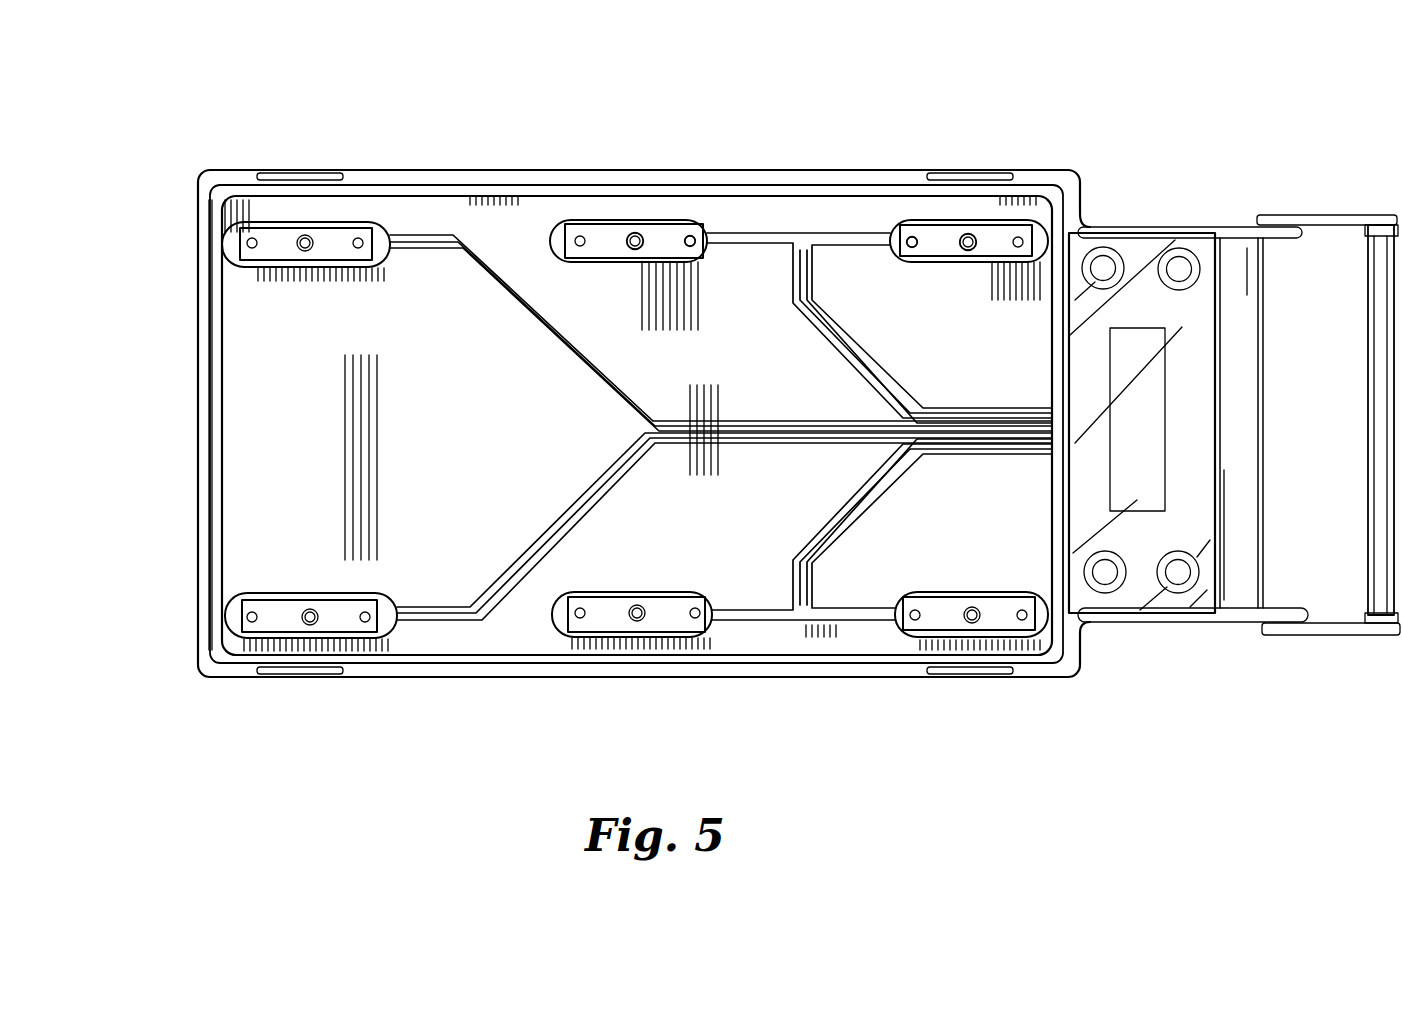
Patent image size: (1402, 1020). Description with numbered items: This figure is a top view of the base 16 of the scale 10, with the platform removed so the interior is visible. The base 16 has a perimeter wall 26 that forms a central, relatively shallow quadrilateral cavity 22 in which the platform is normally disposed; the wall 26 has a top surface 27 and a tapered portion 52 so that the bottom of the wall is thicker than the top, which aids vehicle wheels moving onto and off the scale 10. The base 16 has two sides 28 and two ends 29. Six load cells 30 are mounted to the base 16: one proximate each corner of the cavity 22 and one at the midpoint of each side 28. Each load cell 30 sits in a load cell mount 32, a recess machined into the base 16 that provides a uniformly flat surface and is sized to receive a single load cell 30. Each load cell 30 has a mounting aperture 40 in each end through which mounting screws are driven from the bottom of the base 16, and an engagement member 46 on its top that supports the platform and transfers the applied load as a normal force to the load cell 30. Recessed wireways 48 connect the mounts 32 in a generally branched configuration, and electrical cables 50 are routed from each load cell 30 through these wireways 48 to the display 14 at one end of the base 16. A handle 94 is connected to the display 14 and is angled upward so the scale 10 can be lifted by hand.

The scale 10 is at (268, 87).
The display 14 is at (1159, 200).
The base 16 is at (537, 112).
The quadrilateral cavity 22 is at (500, 507).
The perimeter wall 26 is at (198, 322).
The top surface 27 is at (226, 512).
The side 28 is at (684, 126).
The end 29 is at (165, 403).
The load cell 30 is at (626, 190).
The load cell mount 32 is at (340, 575).
The mounting aperture 40 is at (692, 247).
The engagement member 46 is at (633, 249).
The recessed wireway 48 is at (440, 607).
The electrical cable 50 is at (625, 462).
The tapered portion 52 is at (200, 482).
The handle 94 is at (1372, 293).